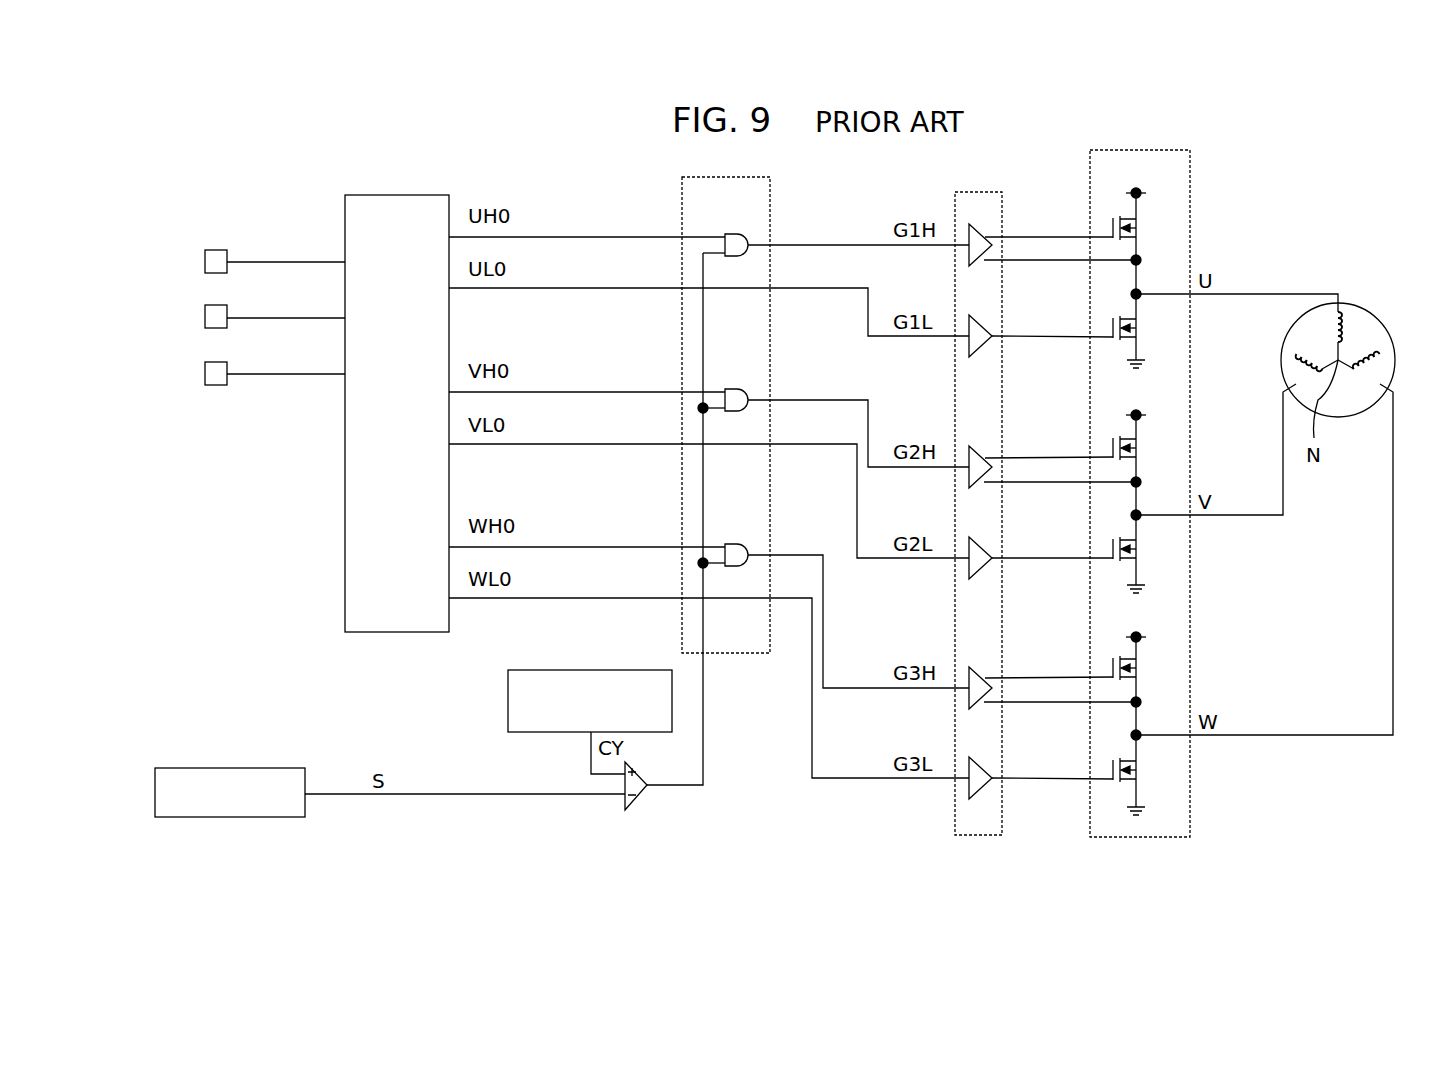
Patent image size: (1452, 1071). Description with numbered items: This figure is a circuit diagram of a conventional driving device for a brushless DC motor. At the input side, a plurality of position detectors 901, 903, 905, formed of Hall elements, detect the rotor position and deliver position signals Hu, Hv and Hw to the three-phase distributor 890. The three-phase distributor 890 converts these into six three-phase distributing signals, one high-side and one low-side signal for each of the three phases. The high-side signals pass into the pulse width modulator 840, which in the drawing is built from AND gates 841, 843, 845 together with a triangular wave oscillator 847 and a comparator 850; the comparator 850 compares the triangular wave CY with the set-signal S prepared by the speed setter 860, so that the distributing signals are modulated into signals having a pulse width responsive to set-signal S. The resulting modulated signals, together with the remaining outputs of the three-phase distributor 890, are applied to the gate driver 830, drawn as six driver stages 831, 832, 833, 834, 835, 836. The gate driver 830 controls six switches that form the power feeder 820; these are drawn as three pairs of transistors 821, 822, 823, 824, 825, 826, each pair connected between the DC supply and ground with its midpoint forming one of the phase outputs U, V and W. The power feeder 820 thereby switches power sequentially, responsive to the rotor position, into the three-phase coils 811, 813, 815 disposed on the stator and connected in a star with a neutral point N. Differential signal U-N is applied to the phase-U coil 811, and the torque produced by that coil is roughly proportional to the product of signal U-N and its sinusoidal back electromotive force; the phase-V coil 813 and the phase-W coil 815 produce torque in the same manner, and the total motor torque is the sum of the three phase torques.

The position detector 901 is at (222, 273).
The position detector 903 is at (222, 328).
The position detector 905 is at (222, 385).
The three-phase distributor 890 is at (410, 632).
The pulse width modulator 840 is at (730, 653).
The AND gate 841 is at (758, 214).
The AND gate 843 is at (758, 369).
The AND gate 845 is at (758, 524).
The triangular wave oscillator 847 is at (553, 670).
The comparator 850 is at (640, 794).
The speed setter 860 is at (238, 817).
The gate driver 830 is at (982, 835).
The gate driver 831 is at (977, 266).
The gate driver 832 is at (977, 357).
The gate driver 833 is at (977, 488).
The gate driver 834 is at (977, 579).
The gate driver 835 is at (977, 709).
The gate driver 836 is at (977, 799).
The power feeder 820 is at (1135, 837).
The high-side transistor 821 is at (1130, 235).
The low-side transistor 822 is at (1140, 332).
The high-side transistor 823 is at (1130, 455).
The low-side transistor 824 is at (1140, 553).
The high-side transistor 825 is at (1130, 675).
The low-side transistor 826 is at (1140, 774).
The phase-U coil 811 is at (1352, 325).
The phase-V coil 813 is at (1300, 368).
The phase-W coil 815 is at (1378, 370).